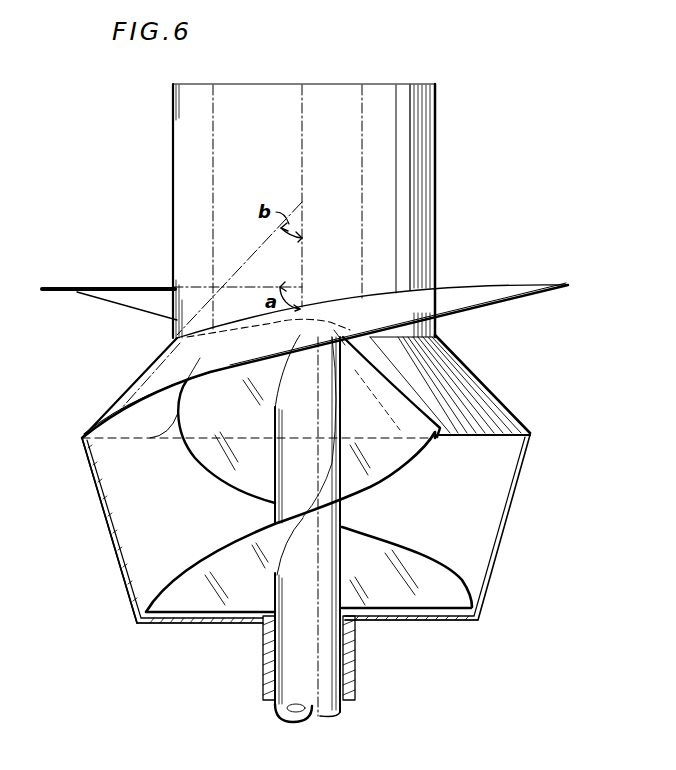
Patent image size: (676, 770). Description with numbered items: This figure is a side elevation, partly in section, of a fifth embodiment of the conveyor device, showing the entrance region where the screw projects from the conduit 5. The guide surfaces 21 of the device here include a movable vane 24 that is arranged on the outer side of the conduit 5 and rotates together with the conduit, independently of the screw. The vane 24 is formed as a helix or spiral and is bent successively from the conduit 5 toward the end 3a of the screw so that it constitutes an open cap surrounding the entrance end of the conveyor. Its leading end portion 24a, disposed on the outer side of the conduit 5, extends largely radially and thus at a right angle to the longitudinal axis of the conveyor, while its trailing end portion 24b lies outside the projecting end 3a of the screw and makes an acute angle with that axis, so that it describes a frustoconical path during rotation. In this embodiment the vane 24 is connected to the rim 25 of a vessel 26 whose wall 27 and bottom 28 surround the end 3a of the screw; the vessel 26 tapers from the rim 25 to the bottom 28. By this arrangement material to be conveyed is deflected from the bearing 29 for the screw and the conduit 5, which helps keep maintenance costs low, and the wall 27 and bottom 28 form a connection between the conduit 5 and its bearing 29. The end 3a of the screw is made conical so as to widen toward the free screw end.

The conduit 5 is at (430, 126).
The movable vane 24 is at (138, 286).
The leading end portion 24a is at (70, 287).
The guide surfaces 21 is at (149, 368).
The trailing end portion 24b is at (124, 404).
The rim 25 is at (530, 434).
The vessel 26 is at (112, 538).
The wall 27 is at (93, 485).
The bottom 28 is at (168, 626).
The bearing 29 is at (263, 661).
The end of the screw 3a is at (423, 574).